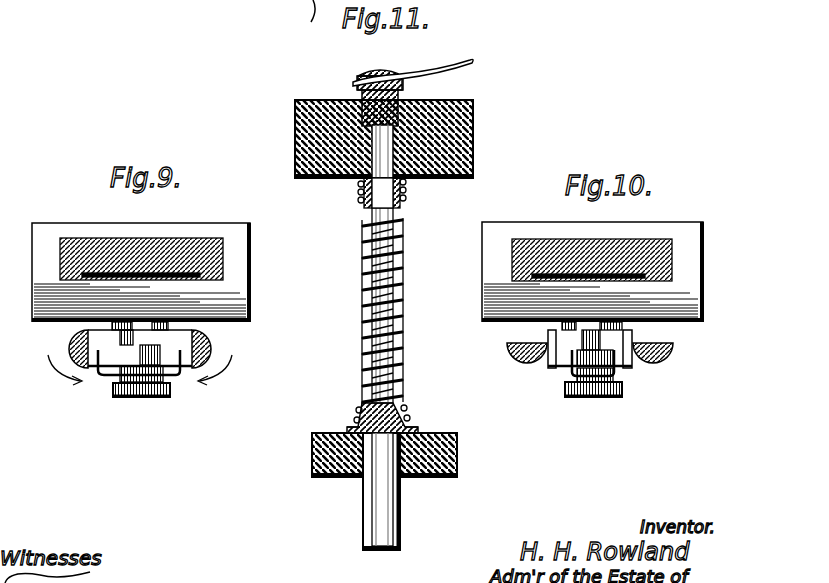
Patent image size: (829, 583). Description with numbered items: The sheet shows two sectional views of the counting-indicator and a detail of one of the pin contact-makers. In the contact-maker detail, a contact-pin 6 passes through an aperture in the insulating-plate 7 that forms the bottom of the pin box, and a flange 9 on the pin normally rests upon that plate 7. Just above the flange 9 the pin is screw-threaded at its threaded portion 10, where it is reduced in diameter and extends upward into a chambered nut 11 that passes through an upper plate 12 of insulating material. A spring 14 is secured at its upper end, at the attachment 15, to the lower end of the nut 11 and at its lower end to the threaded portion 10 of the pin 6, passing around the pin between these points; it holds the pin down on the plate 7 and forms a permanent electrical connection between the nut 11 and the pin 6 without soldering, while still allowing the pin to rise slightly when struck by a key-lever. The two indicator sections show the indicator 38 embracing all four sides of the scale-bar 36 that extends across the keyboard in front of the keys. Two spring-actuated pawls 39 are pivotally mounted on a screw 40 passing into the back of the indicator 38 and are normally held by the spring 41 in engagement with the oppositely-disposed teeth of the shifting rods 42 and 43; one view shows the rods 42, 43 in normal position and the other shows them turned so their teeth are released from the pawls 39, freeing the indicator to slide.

In FIG. 11, the contact-pin 6 is at (401, 518).
In FIG. 11, the insulating-plate 7 is at (459, 426).
In FIG. 11, the flange 9 is at (412, 432).
In FIG. 11, the screw-threaded portion 10 is at (400, 411).
In FIG. 11, the chambered nut 11 is at (408, 82).
In FIG. 11, the insulating plate 12 is at (474, 132).
In FIG. 11, the spring 14 is at (396, 258).
In FIG. 11, the spring upper end attachment 15 is at (403, 183).
In FIG. 9, the scale 36 is at (129, 233).
In FIG. 10, the scale 36 is at (581, 233).
In FIG. 9, the indicator 38 is at (232, 222).
In FIG. 10, the indicator 38 is at (681, 222).
In FIG. 9, the spring-actuated pawl 39 is at (132, 345).
In FIG. 10, the spring-actuated pawl 39 is at (582, 350).
In FIG. 9, the screw 40 is at (142, 384).
In FIG. 10, the screw 40 is at (590, 384).
In FIG. 9, the spring 41 is at (180, 367).
In FIG. 10, the spring 41 is at (616, 369).
In FIG. 9, the shifting rod 42 is at (60, 345).
In FIG. 10, the shifting rod 42 is at (510, 346).
In FIG. 10, the shifting rod 43 is at (672, 350).